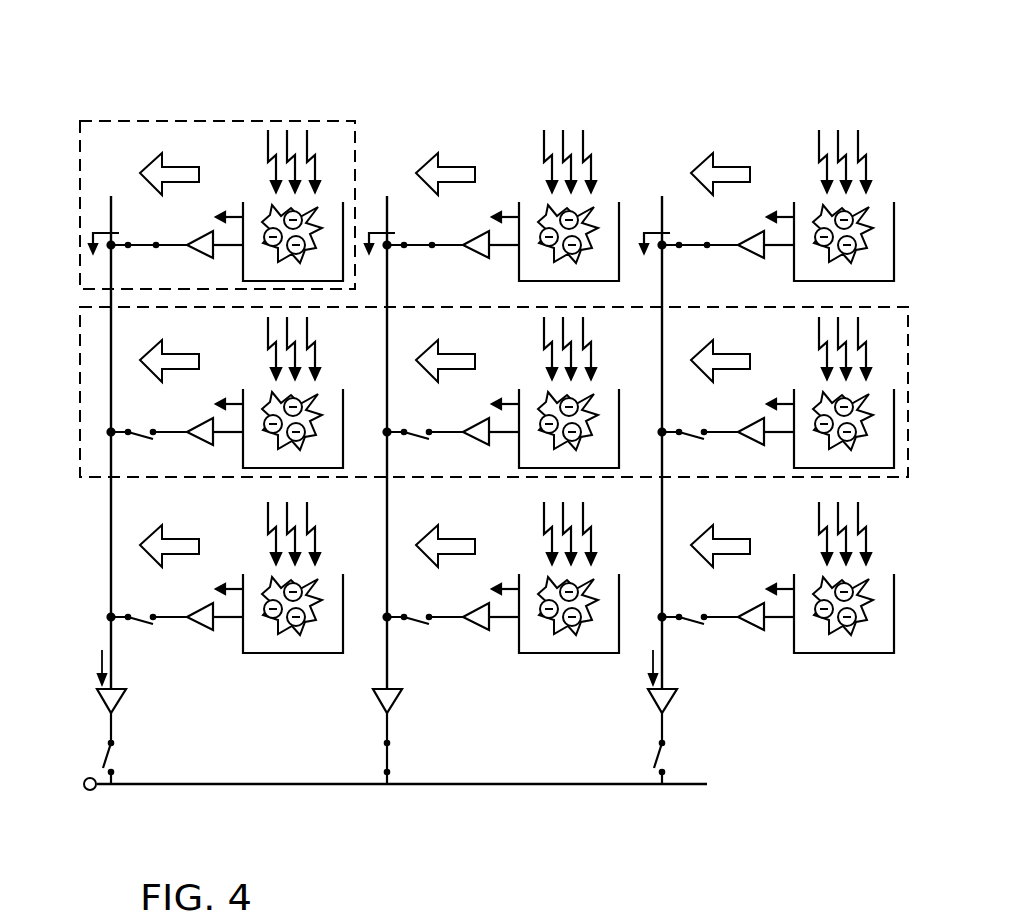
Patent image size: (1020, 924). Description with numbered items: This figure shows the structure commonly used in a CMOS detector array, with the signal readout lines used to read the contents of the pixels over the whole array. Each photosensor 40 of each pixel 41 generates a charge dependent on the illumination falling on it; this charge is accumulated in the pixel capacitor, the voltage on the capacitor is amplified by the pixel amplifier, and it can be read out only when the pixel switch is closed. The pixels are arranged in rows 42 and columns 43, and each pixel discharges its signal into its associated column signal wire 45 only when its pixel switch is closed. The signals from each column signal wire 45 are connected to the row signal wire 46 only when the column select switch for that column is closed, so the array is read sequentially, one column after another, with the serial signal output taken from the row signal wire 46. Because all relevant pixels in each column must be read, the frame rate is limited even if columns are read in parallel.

The photosensor 40 is at (318, 212).
The pixel 41 is at (80, 152).
The row 42 is at (80, 365).
The column 43 is at (195, 81).
The column signal wire 45 is at (112, 655).
The row signal wire 46 is at (592, 784).